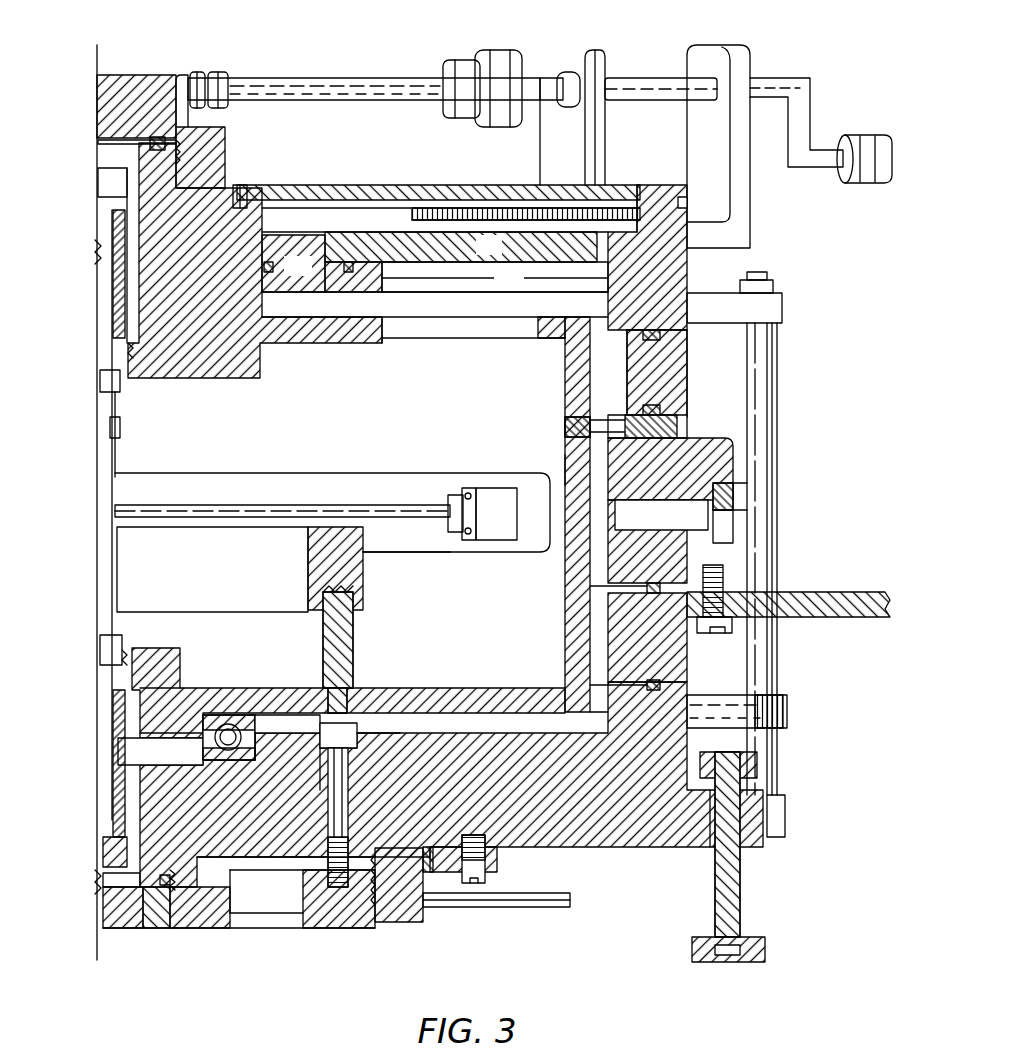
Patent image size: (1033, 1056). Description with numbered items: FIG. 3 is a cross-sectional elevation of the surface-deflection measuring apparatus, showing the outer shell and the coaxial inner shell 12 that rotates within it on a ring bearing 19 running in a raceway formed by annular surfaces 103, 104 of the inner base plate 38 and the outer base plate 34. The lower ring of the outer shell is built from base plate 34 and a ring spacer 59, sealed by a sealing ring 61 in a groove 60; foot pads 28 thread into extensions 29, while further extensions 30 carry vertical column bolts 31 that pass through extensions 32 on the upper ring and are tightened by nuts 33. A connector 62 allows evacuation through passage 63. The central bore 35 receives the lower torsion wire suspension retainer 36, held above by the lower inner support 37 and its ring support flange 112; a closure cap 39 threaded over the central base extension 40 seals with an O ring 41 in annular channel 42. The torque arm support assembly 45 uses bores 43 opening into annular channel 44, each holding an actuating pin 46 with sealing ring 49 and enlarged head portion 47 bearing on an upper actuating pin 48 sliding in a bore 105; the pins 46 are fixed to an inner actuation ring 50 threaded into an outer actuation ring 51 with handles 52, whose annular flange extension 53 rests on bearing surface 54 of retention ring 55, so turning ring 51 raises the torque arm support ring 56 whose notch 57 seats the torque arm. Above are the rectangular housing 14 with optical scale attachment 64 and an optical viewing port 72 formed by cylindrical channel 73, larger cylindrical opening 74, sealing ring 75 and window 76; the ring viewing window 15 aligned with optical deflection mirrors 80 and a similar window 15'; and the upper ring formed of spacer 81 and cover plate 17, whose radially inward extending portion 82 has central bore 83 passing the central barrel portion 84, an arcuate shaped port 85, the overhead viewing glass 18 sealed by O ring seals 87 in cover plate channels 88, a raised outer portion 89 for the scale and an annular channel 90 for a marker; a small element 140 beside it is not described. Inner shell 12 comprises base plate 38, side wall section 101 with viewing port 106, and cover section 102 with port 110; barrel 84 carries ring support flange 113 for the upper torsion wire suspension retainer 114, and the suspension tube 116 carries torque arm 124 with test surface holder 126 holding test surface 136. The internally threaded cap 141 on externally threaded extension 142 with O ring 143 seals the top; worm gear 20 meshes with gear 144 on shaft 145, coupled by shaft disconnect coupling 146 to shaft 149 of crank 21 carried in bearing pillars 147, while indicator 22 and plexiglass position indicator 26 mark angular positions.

The inner shell 12 is at (538, 385).
The rectangular housing 14 is at (776, 452).
The ring viewing window 15 is at (660, 407).
The seal ring 15' is at (542, 423).
The cover plate 17 is at (668, 280).
The overhead viewing glass 18 is at (461, 247).
The ring bearing 19 is at (262, 725).
The worm gear 20 is at (157, 75).
The inner shell torquing crank 21 is at (805, 118).
The indicator 22 is at (340, 188).
The plexiglass position indicator 26 is at (412, 212).
The foot pads 28 is at (762, 940).
The extensions 29 is at (765, 847).
The further extensions 30 is at (787, 815).
The vertical column bolt 31 is at (760, 760).
The extension 32 is at (768, 310).
The nut 33 is at (775, 285).
The base plate 34 is at (625, 850).
The central bore 35 is at (103, 878).
The torsion wire suspension retainer 36 is at (113, 710).
The lower inner support 37 is at (182, 662).
The base plate 38 is at (485, 690).
The closure cap 39 is at (240, 928).
The central base extension 40 is at (128, 928).
The O ring 41 is at (165, 928).
The annular channel 42 is at (200, 928).
The bores 43 is at (330, 805).
The annular channel 44 is at (360, 735).
The torque arm support assembly 45 is at (186, 492).
The actuating pin 46 is at (346, 775).
The enlarged head portion 47 is at (338, 735).
The upper actuating pin 48 is at (355, 657).
The sealing ring 49 is at (350, 835).
The inner actuation ring 50 is at (335, 930).
The outer actuation ring 51 is at (400, 922).
The handles 52 is at (510, 910).
The annular flange extension 53 is at (432, 855).
The bearing surface 54 is at (455, 875).
The retention ring 55 is at (495, 855).
The torque arm support ring 56 is at (310, 570).
The notch 57 is at (366, 545).
The ring spacer 59 is at (697, 658).
The groove 60 is at (680, 683).
The sealing ring 61 is at (655, 689).
The connector 62 is at (790, 705).
The passage 63 is at (590, 723).
The optical scale attachment 64 is at (860, 592).
The optical viewing port 72 is at (735, 495).
The cylindrical channel 73 is at (658, 541).
The larger cylindrical opening 74 is at (740, 545).
The sealing ring 75 is at (713, 455).
The optically transparent plastic window 76 is at (738, 530).
The optical deflection mirrors 80 is at (121, 427).
The spacer 81 is at (672, 370).
The radially inward extending portion 82 is at (293, 263).
The central bore 83 is at (264, 300).
The central barrel portion 84 is at (258, 363).
The arcuate shaped port 85 is at (509, 272).
The O ring seals 87 is at (353, 267).
The cover plate channels 88 is at (400, 284).
The raised outer portion 89 is at (673, 193).
The annular channel 90 is at (686, 203).
The side wall section 101 is at (578, 610).
The cover section 102 is at (372, 340).
The annular surface 103 is at (175, 735).
The annular surface 104 is at (275, 745).
The bores 105 is at (330, 690).
The optical deflection viewing ports 106 is at (566, 470).
The sample removal and viewing port 110 is at (455, 330).
The ring support flange 112 is at (125, 650).
The ring support flange 113 is at (137, 373).
The upper torsion wire suspension retainer 114 is at (118, 290).
The suspension tube 116 is at (120, 582).
The torque arm 124 is at (272, 507).
The test surface holder 126 is at (450, 495).
The test surface 136 is at (496, 514).
The clip 140 is at (247, 195).
The internally threaded cap 141 is at (225, 157).
The externally threaded extension 142 is at (98, 146).
The O ring 143 is at (165, 143).
The gear 144 is at (220, 72).
The shaft 145 is at (365, 80).
The shaft disconnect coupling 146 is at (508, 52).
The bearing pillars 147 is at (700, 58).
The shaft 149 is at (548, 78).